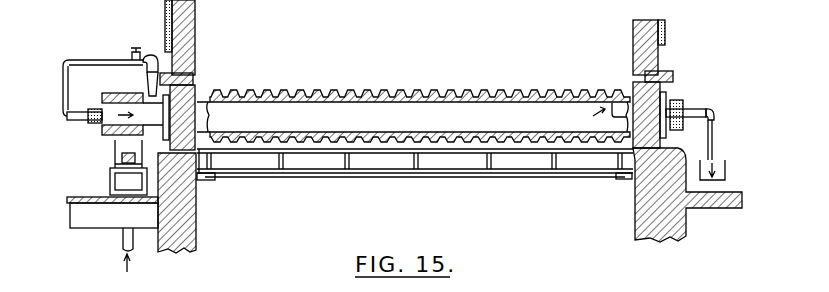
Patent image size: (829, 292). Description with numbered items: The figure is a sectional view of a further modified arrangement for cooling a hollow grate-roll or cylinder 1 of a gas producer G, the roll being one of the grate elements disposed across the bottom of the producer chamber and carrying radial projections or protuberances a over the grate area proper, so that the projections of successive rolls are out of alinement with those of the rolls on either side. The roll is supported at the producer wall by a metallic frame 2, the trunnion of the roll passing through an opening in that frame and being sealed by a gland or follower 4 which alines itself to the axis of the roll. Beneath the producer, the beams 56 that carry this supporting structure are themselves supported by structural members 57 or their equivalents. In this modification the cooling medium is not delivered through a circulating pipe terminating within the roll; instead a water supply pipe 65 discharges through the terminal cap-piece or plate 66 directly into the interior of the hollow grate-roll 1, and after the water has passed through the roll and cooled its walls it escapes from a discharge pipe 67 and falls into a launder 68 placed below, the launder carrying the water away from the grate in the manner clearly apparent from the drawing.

The hollow grate-roll 1 is at (413, 100).
The radial projections a is at (474, 92).
The metallic frame 2 is at (193, 92).
The gland 4 is at (166, 140).
The gas producer G is at (663, 23).
The beams 56 is at (344, 177).
The structural members 57 is at (211, 180).
The water supply pipe 65 is at (63, 104).
The terminal cap-piece 66 is at (104, 133).
The discharge pipe 67 is at (690, 114).
The launder 68 is at (726, 172).